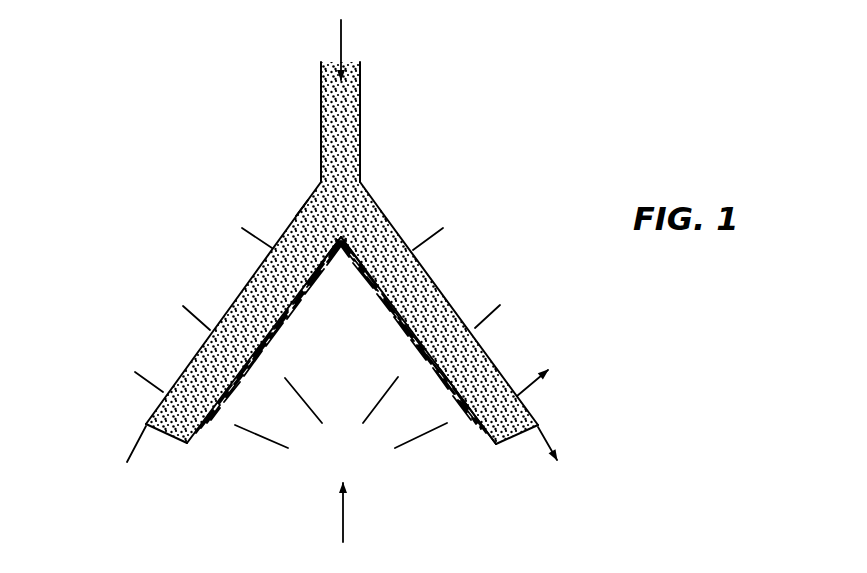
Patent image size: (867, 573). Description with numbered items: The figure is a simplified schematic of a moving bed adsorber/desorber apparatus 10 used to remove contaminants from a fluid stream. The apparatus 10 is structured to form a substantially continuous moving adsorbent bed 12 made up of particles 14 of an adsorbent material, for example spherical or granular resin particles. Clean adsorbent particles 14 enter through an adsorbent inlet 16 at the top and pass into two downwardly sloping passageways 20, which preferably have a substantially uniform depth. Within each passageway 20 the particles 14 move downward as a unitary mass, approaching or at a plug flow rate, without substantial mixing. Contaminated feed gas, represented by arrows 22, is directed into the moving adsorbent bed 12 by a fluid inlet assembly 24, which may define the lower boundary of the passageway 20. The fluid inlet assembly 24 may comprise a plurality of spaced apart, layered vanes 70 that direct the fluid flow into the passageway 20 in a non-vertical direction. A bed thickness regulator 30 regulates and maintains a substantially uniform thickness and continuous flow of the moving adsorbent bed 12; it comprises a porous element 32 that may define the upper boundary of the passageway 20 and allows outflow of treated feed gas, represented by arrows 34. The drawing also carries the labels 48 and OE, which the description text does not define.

The moving bed adsorber/desorber apparatus 10 is at (518, 160).
The moving adsorbent bed 12 is at (375, 217).
The adsorbent particles 14 is at (354, 142).
The adsorbent inlet 16 is at (352, 70).
The passageways 20 is at (448, 300).
The contaminated feed gas 22 is at (373, 396).
The fluid inlet assembly 24 is at (473, 418).
The bed thickness regulator 30 is at (300, 207).
The porous element 32 is at (236, 302).
The treated feed gas 34 is at (487, 325).
The open end of branch conduit 48 is at (148, 422).
The vanes 70 is at (205, 440).
The outer edge flow OE is at (472, 337).